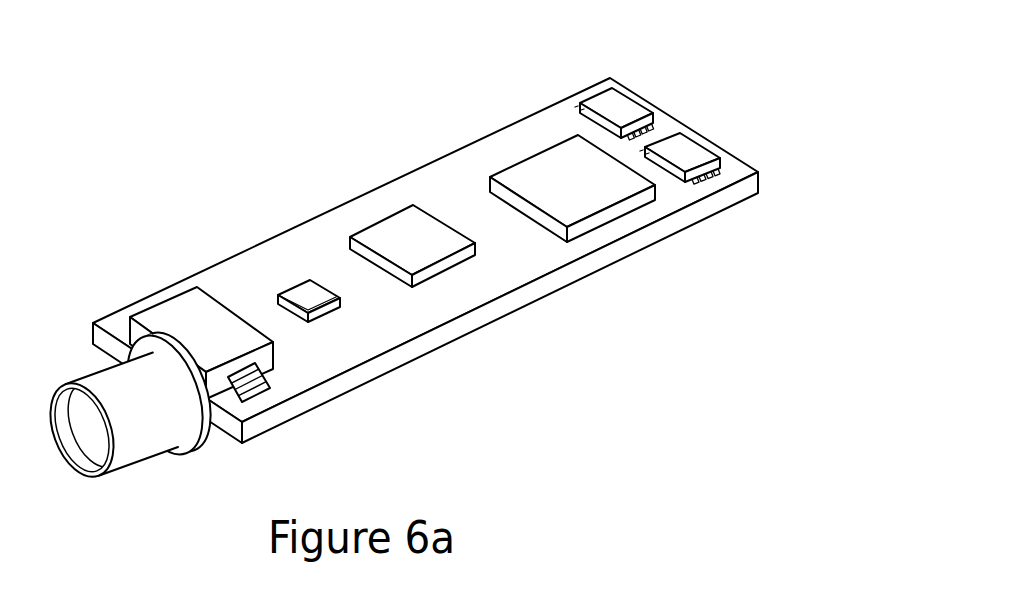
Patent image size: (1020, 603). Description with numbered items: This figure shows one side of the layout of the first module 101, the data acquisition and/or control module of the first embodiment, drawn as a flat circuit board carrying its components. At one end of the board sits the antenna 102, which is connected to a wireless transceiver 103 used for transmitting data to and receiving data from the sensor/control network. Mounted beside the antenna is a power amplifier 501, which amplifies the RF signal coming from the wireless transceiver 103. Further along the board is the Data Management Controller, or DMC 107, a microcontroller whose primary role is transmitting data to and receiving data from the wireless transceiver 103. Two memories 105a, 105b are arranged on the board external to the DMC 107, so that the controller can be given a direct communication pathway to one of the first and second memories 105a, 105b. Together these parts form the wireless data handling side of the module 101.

The first module 101 is at (563, 325).
The antenna 102 is at (187, 318).
The wireless transceiver 103 is at (403, 233).
The Data Management Controller (DMC) 107 is at (565, 183).
The first memory 105a is at (622, 108).
The second memory 105b is at (692, 157).
The power amplifier 501 is at (305, 290).